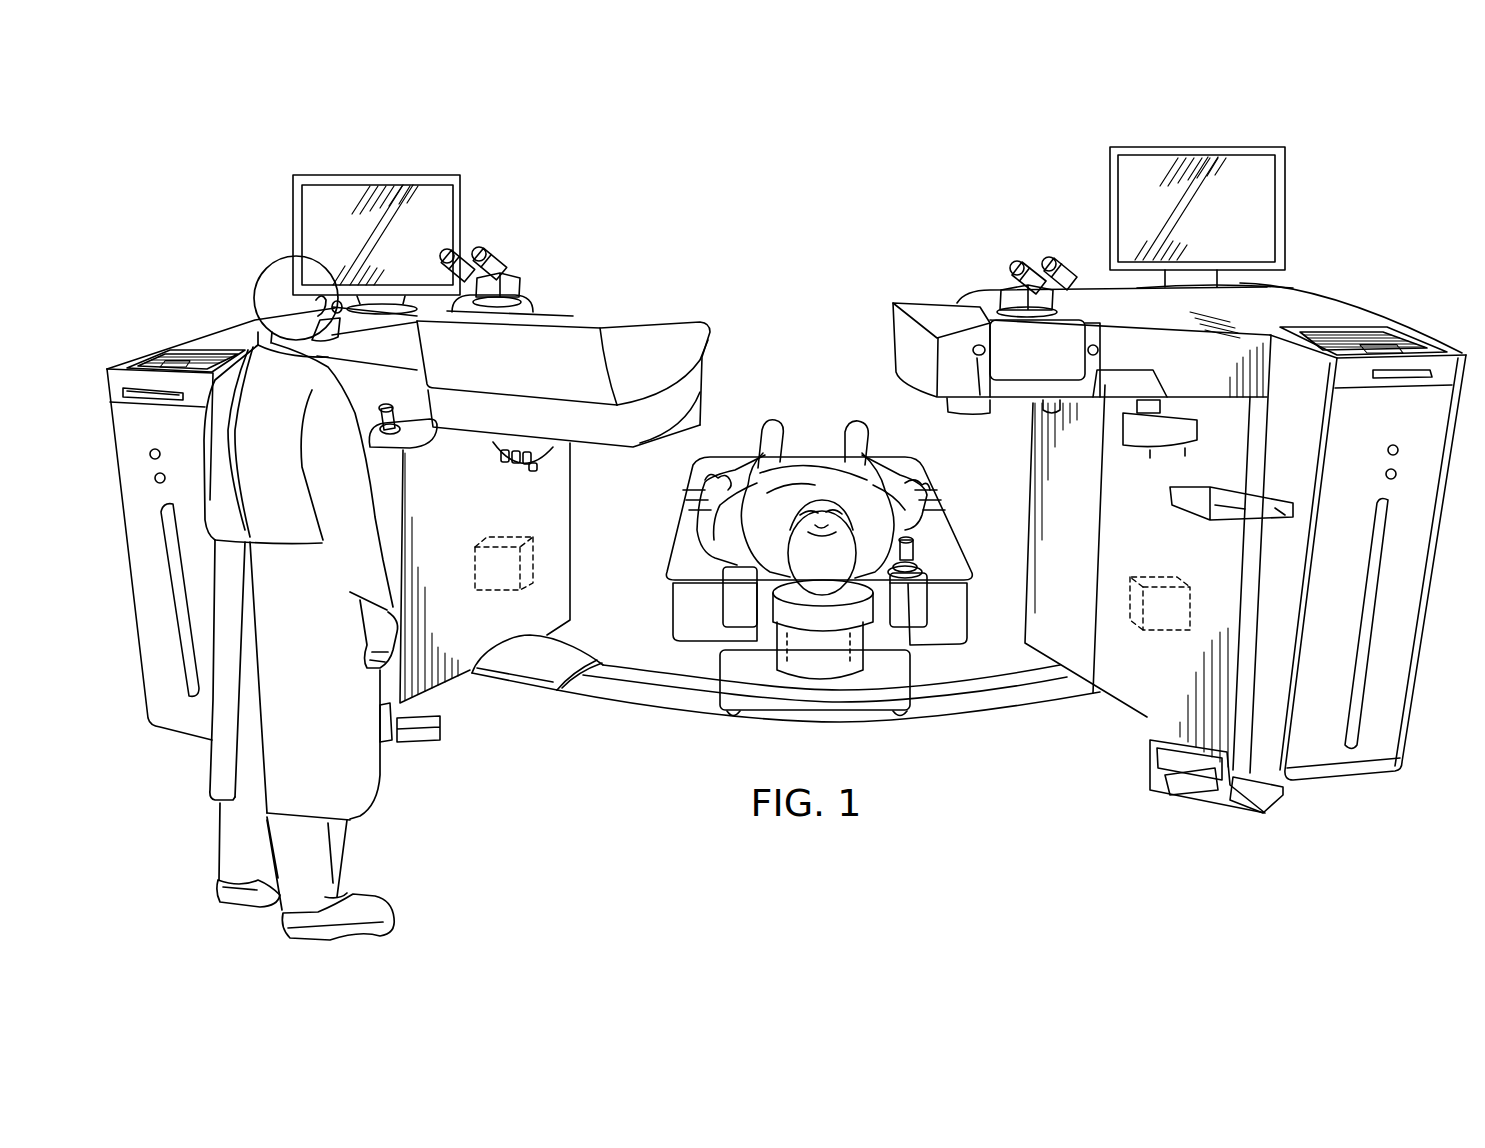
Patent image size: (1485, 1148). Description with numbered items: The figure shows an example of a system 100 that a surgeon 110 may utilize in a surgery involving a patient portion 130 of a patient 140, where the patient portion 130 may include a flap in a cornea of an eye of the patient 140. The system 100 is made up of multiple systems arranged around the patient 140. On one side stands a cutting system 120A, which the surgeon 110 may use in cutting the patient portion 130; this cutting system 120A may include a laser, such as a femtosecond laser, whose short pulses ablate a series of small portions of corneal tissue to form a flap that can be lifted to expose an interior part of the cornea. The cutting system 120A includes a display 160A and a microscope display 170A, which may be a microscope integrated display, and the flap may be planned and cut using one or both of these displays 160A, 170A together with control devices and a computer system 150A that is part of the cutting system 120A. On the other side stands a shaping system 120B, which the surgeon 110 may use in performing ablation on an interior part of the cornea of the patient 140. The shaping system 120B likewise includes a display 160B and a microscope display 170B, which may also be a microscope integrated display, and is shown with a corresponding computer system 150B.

The system 100 is at (432, 112).
The surgeon 110 is at (210, 736).
The cutting system 120A is at (251, 157).
The shaping system 120B is at (1358, 124).
The patient portion 130 is at (878, 490).
The patient 140 is at (777, 423).
The computer system 150A is at (505, 537).
The second controller 150B is at (1150, 577).
The display 160A is at (293, 235).
The display 160B is at (1285, 210).
The microscope display 170A is at (483, 255).
The microscope display 170B is at (1037, 257).